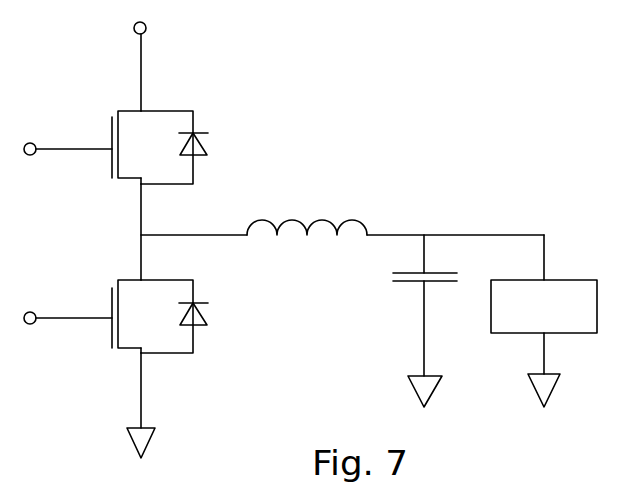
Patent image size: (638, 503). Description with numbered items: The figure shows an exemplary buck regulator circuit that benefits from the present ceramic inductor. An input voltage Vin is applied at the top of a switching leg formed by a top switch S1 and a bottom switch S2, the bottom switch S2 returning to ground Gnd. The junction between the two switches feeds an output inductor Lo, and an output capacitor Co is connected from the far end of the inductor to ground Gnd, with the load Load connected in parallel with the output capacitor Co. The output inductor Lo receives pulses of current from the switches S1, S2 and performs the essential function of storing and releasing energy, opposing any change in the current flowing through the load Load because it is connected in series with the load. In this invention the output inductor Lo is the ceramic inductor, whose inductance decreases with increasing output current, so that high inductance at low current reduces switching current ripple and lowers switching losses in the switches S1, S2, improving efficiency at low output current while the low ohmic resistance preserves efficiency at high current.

The input voltage terminal Vin is at (166, 61).
The top switch S1 is at (116, 147).
The bottom switch S2 is at (116, 316).
The ground terminal Gnd is at (178, 406).
The output inductor Lo is at (297, 219).
The output capacitor Co is at (408, 284).
The load Load is at (544, 321).